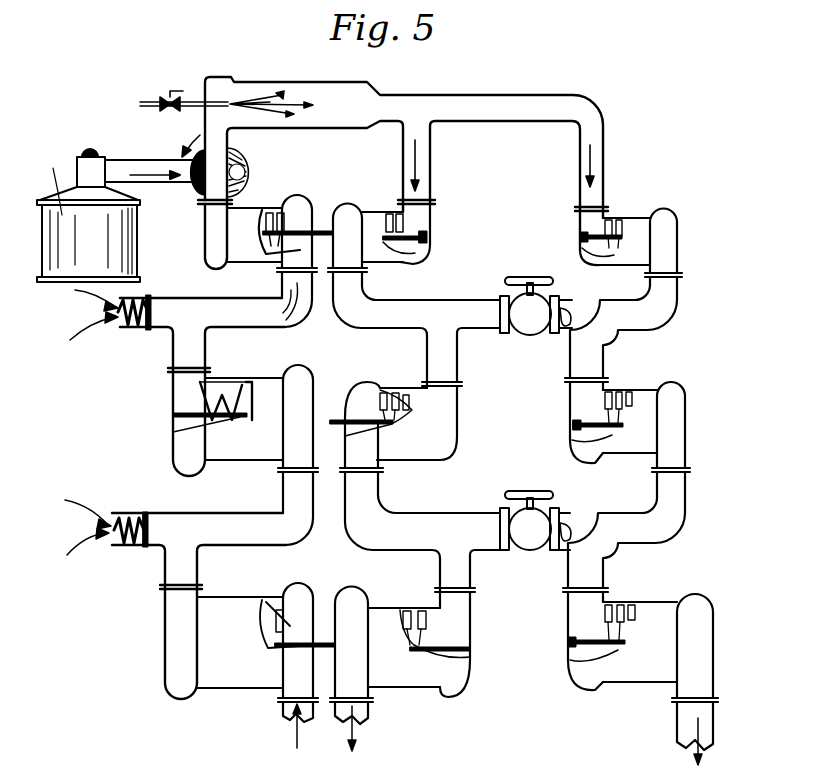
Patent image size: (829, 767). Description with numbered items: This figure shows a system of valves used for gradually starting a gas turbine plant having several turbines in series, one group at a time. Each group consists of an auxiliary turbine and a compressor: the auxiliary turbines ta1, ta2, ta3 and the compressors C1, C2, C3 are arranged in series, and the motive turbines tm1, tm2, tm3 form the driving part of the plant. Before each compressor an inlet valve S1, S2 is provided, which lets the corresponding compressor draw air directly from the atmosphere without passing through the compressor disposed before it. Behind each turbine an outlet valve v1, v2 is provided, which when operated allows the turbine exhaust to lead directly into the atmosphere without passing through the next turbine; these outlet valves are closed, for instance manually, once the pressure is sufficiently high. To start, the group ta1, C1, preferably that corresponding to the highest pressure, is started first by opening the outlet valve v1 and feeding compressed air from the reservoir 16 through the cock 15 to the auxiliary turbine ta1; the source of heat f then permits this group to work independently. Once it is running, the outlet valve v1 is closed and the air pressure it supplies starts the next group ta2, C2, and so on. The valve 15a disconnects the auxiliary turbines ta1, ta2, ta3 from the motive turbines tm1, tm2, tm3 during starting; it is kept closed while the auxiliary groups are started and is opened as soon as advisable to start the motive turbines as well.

The valve 15a is at (458, 113).
The source of heat f is at (229, 101).
The cock 15 is at (252, 160).
The reservoir 16 is at (78, 205).
The compressor C1 is at (264, 240).
The compressor C2 is at (259, 426).
The compressor C3 is at (262, 672).
The inlet valve S1 is at (146, 306).
The inlet valve S2 is at (149, 517).
The auxiliary turbine ta1 is at (386, 221).
The auxiliary turbine ta2 is at (402, 428).
The auxiliary turbine ta3 is at (403, 672).
The motive turbine tm1 is at (622, 232).
The motive turbine tm2 is at (630, 426).
The motive turbine tm3 is at (630, 673).
The outlet valve v1 is at (531, 331).
The outlet valve v2 is at (531, 552).